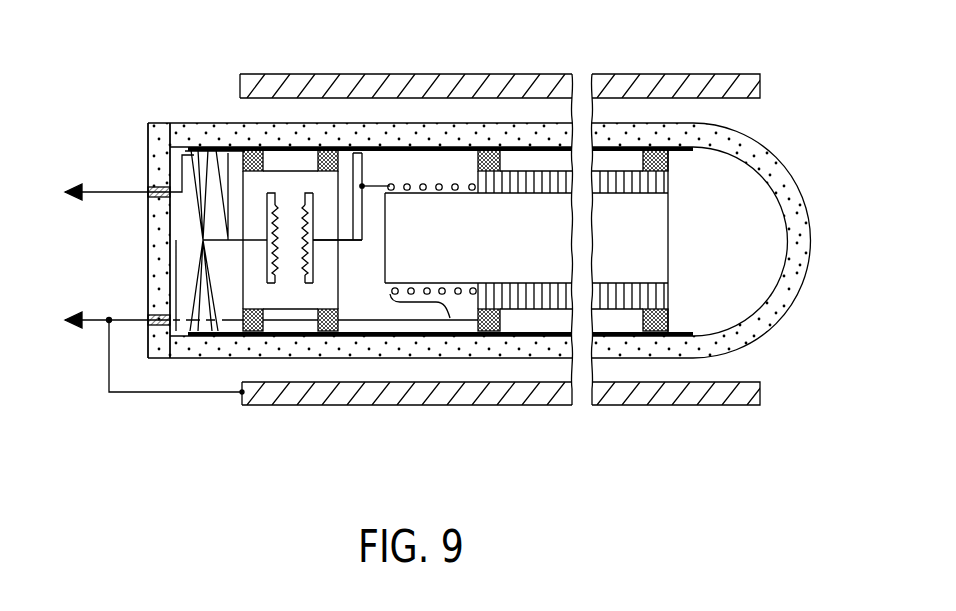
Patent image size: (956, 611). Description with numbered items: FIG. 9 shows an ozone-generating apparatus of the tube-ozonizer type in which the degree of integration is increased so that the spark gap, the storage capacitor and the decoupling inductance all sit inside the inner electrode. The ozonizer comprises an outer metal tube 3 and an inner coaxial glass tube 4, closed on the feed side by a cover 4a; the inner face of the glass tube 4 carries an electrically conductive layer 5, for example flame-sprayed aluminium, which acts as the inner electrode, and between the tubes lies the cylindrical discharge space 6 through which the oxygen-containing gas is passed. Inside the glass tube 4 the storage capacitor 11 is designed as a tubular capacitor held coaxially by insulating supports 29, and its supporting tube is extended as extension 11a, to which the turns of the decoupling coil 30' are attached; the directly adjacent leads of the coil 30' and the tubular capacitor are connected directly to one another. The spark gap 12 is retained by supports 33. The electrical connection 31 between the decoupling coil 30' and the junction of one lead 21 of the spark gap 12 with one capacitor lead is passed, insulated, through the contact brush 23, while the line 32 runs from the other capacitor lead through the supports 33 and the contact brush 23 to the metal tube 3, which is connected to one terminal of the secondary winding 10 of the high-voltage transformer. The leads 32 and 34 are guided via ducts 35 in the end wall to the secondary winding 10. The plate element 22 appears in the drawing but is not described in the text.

The outer metal tube 3 is at (680, 390).
The inner coaxial glass tube 4 is at (754, 156).
The cover 4a is at (160, 250).
The electrically conductive layer 5 is at (532, 150).
The cylindrical discharge space 6 is at (468, 370).
The secondary winding 10 is at (88, 275).
The storage capacitor 11 is at (542, 297).
The extension 11a is at (458, 294).
The spark gap 12 is at (293, 288).
The lead of the spark gap 21 is at (216, 150).
The contact plate 22 is at (353, 153).
The contact brush 23 is at (197, 333).
The supports 29 is at (655, 150).
The decoupling coil 30' is at (401, 381).
The electrical connection 31 is at (363, 186).
The line 32 is at (372, 320).
The supports 33 is at (330, 331).
The lead 34 is at (118, 193).
The ducts 35 is at (148, 319).